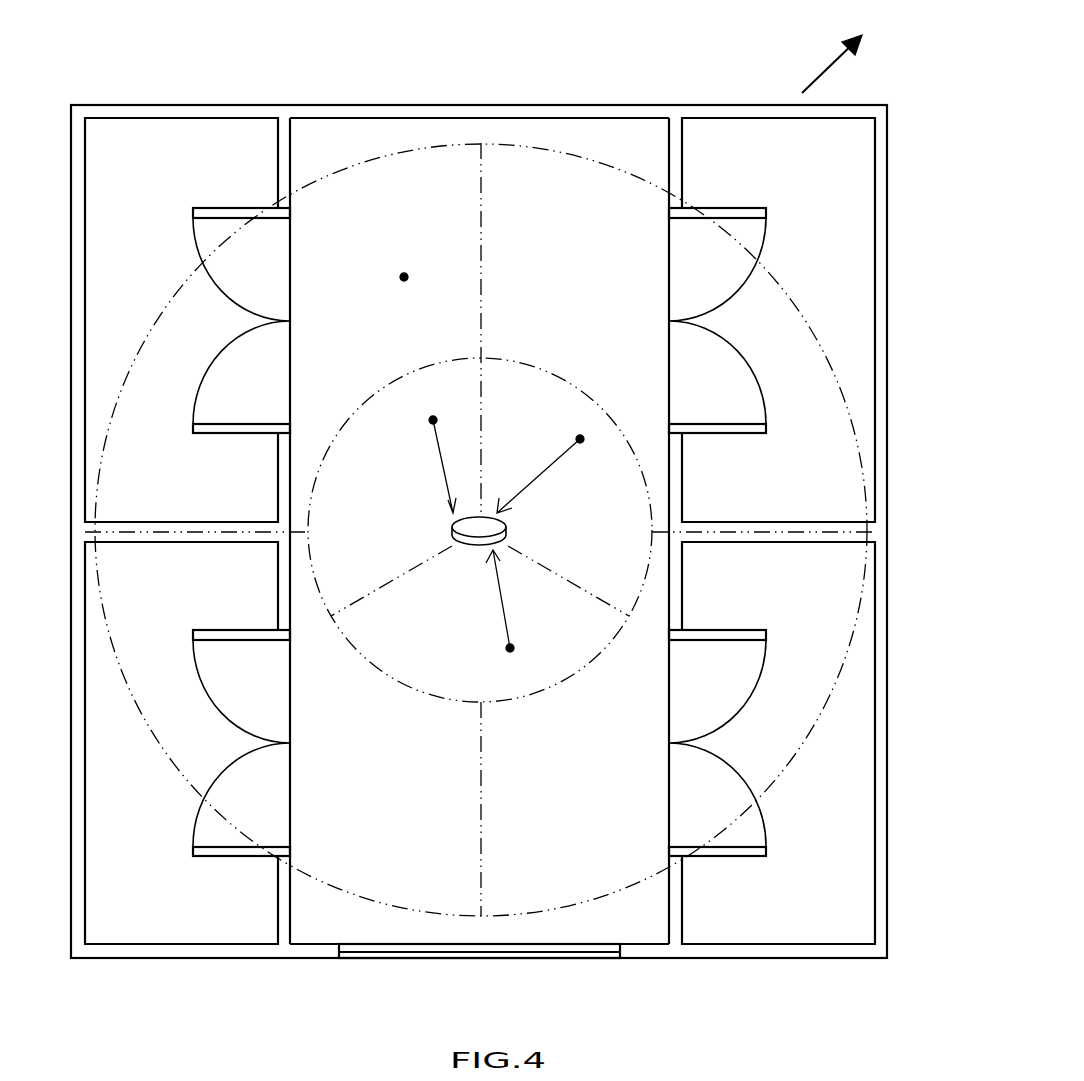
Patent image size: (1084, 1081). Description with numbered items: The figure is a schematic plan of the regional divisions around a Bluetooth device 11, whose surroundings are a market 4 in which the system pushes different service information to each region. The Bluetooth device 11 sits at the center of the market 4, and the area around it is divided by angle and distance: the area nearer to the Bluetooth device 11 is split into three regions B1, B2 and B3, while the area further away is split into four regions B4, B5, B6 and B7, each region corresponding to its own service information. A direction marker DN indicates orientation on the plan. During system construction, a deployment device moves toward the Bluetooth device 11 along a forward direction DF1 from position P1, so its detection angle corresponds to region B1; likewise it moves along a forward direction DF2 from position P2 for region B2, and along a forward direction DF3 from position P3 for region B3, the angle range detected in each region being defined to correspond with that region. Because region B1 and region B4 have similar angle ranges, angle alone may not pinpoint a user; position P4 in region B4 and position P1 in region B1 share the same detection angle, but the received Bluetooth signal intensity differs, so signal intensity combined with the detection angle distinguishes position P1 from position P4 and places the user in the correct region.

The market 4 is at (613, 112).
The Bluetooth device 11 is at (488, 524).
The direction north DN is at (850, 53).
The position P1 is at (418, 415).
The position P2 is at (526, 649).
The position P3 is at (567, 426).
The position P4 is at (420, 275).
The region B1 is at (391, 543).
The region B2 is at (480, 530).
The region B3 is at (568, 543).
The region B4 is at (216, 320).
The region B5 is at (746, 320).
The region B6 is at (746, 743).
The region B7 is at (216, 743).
The forward direction DF1 is at (426, 475).
The forward direction DF2 is at (538, 484).
The forward direction DF3 is at (477, 599).